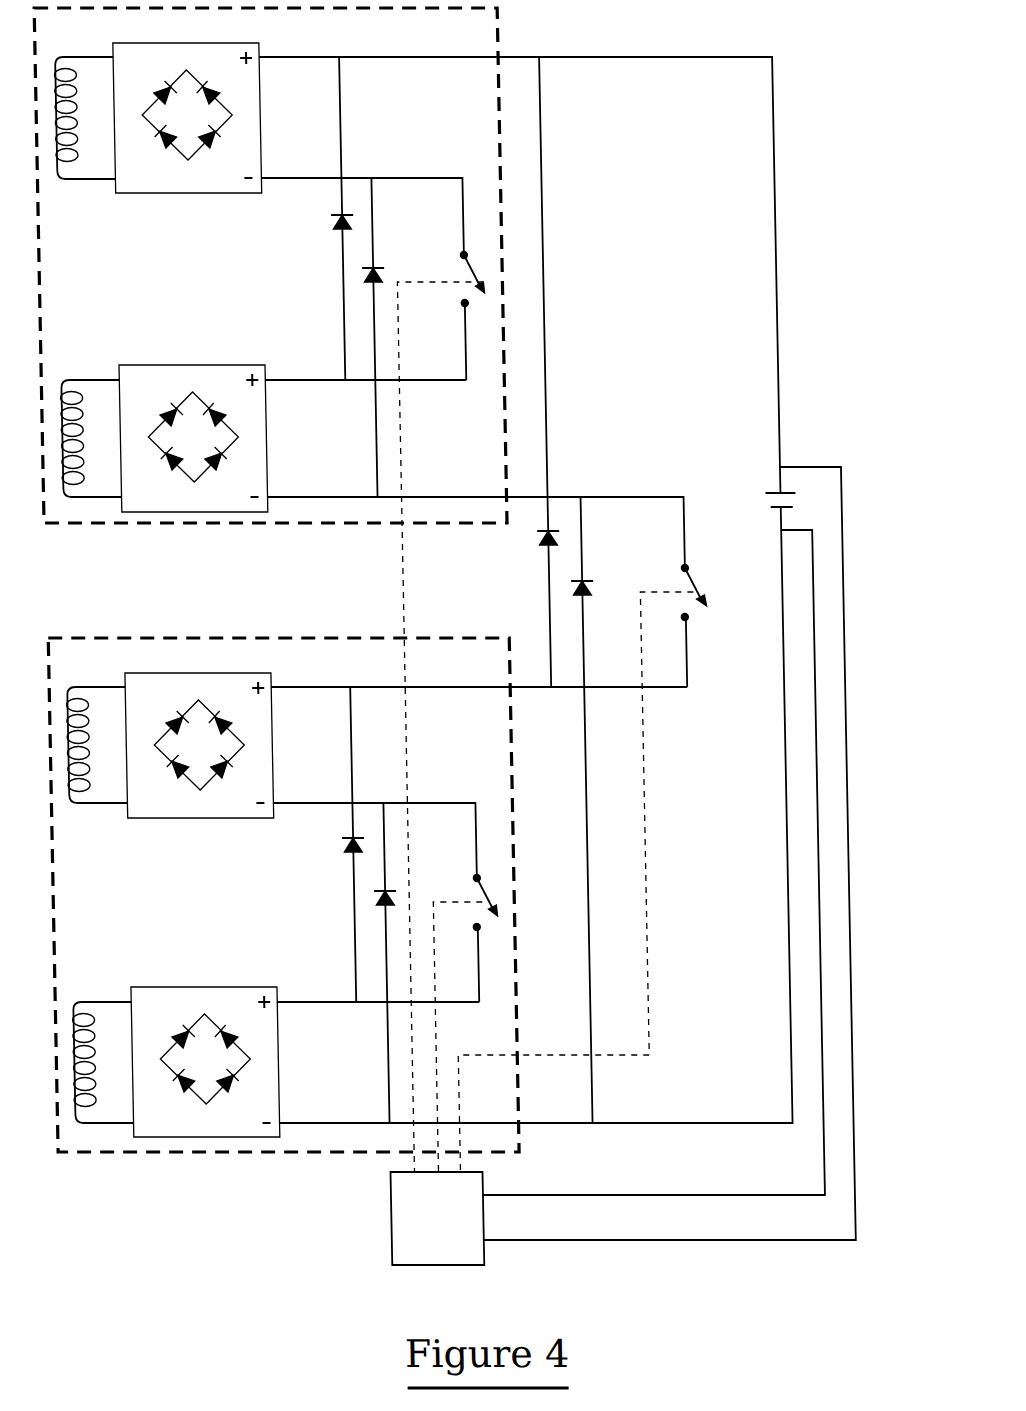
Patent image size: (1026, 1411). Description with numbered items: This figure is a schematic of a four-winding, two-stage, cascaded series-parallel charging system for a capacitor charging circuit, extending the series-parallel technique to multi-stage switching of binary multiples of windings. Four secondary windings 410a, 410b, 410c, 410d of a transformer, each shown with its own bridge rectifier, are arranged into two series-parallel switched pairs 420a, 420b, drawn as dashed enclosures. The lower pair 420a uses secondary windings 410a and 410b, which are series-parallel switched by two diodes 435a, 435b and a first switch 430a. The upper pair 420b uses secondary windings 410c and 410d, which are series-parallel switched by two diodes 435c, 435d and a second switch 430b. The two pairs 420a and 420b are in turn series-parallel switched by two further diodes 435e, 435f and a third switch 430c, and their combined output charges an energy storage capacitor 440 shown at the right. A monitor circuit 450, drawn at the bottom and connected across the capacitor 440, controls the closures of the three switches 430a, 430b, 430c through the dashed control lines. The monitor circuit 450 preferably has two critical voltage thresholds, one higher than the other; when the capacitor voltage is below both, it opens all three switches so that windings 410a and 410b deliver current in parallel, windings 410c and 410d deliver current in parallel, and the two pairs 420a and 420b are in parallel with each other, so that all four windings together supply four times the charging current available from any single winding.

The secondary winding 410a is at (87, 999).
The secondary winding 410b is at (86, 684).
The secondary winding 410c is at (85, 377).
The secondary winding 410d is at (84, 53).
The series-parallel switched pair 420a is at (148, 636).
The series-parallel switched pair 420b is at (499, 40).
The first switch 430a is at (455, 892).
The second switch 430b is at (452, 268).
The third switch 430c is at (667, 583).
The diode 435a is at (356, 900).
The diode 435b is at (326, 846).
The diode 435c is at (356, 276).
The diode 435d is at (326, 219).
The diode 435e is at (527, 536).
The diode 435f is at (560, 589).
The energy storage capacitor 440 is at (750, 506).
The monitor circuit 450 is at (368, 1222).